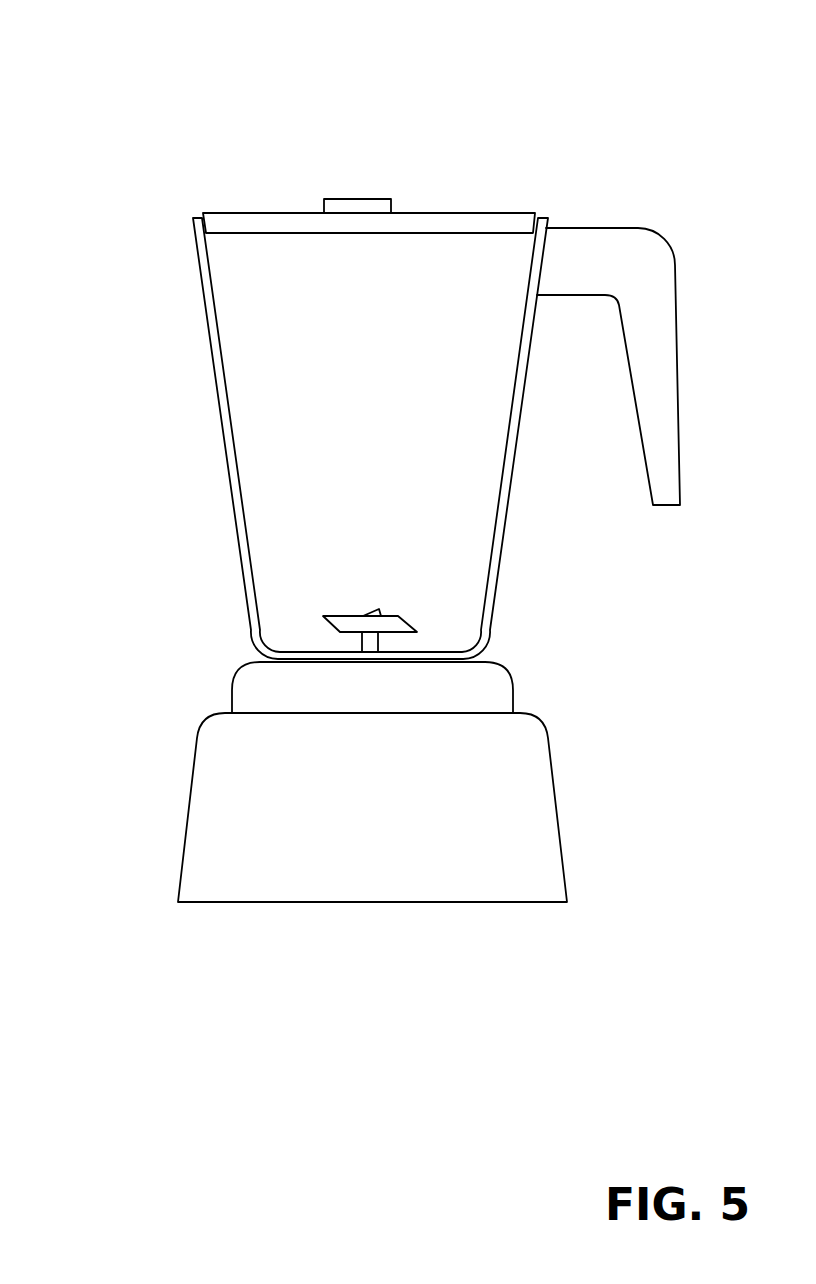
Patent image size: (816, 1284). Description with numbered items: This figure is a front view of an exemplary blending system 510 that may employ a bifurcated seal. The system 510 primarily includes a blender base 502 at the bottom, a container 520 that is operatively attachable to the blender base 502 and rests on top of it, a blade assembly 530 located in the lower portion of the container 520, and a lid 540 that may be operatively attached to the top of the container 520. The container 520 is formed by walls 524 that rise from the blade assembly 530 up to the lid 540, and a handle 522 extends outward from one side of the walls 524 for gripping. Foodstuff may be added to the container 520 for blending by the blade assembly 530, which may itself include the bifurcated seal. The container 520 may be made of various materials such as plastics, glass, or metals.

The blender system 510 is at (549, 80).
The blender base 502 is at (535, 745).
The container 520 is at (142, 378).
The handle 522 is at (663, 275).
The walls 524 is at (212, 327).
The blade assembly 530 is at (296, 602).
The lid 540 is at (264, 187).